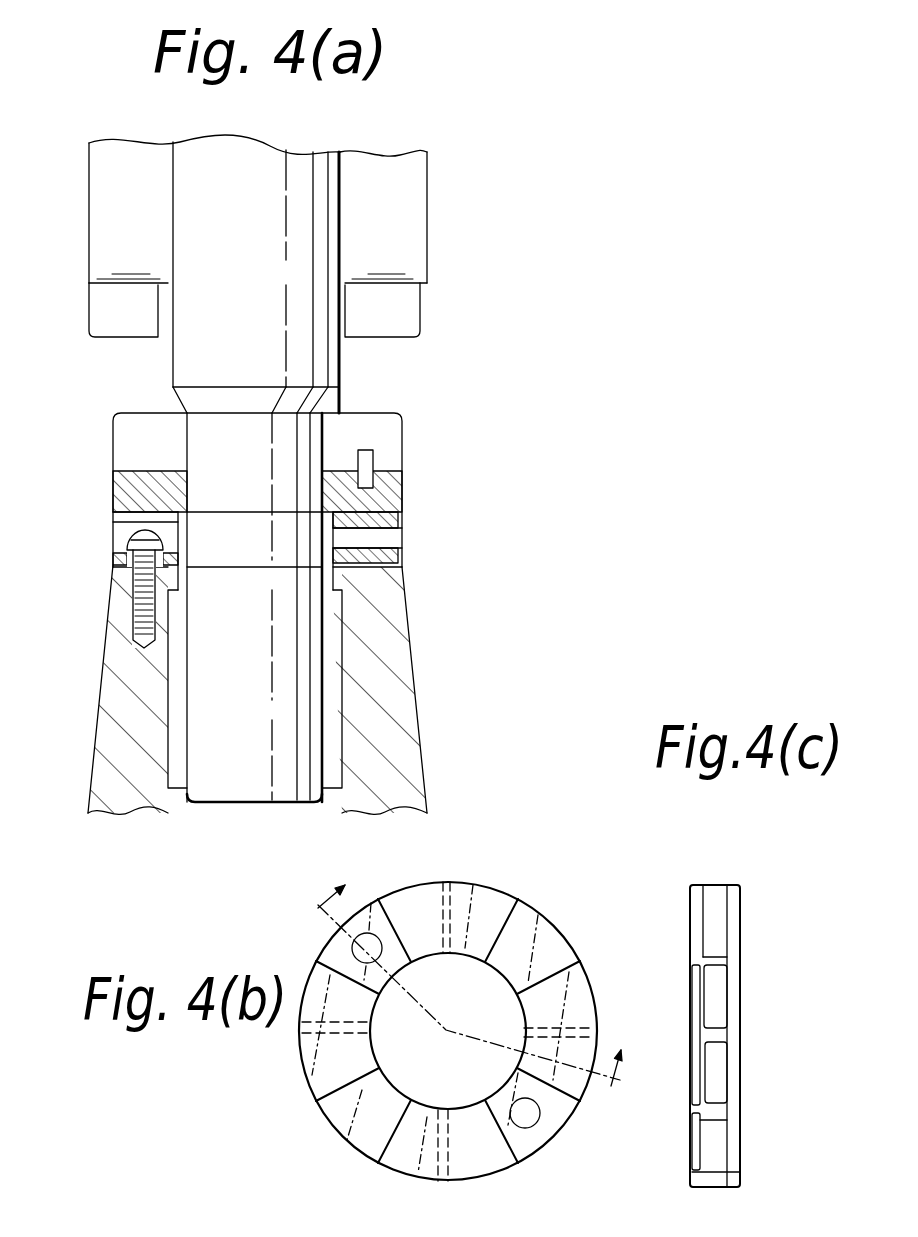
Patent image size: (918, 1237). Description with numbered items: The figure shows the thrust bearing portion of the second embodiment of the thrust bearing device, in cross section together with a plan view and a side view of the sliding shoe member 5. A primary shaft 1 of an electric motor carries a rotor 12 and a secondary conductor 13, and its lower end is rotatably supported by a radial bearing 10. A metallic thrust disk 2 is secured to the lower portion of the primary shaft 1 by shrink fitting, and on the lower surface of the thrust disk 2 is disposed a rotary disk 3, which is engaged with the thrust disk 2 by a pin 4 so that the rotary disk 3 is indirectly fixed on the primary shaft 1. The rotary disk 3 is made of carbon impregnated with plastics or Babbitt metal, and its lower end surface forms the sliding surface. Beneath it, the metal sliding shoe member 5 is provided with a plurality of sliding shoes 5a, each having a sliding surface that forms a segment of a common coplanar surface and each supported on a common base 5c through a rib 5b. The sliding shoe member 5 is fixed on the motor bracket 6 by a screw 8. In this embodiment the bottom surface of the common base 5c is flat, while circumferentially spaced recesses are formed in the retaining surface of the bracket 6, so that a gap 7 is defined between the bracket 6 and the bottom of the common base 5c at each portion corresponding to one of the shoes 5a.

In FIG. 4A, the primary shaft 1 is at (340, 193).
In FIG. 4A, the rotor 12 is at (427, 238).
In FIG. 4A, the secondary conductor 13 is at (427, 312).
In FIG. 4A, the thrust disk 2 is at (402, 440).
In FIG. 4A, the rotary disk 3 is at (113, 495).
In FIG. 4A, the pin 4 is at (375, 462).
In FIG. 4A, the sliding shoe member 5 is at (113, 543).
In FIG. 4B, the sliding shoe member 5 is at (568, 935).
In FIG. 4C, the sliding shoe member 5 is at (731, 875).
In FIG. 4A, the sliding shoe 5a is at (113, 515).
In FIG. 4B, the sliding shoe 5a is at (497, 912).
In FIG. 4C, the sliding shoe 5a is at (695, 985).
In FIG. 4A, the rib 5b is at (402, 538).
In FIG. 4B, the rib 5b is at (465, 890).
In FIG. 4C, the rib 5b is at (710, 1037).
In FIG. 4A, the common base 5c is at (113, 557).
In FIG. 4B, the common base 5c is at (533, 968).
In FIG. 4C, the common base 5c is at (730, 1068).
In FIG. 4A, the motor bracket 6 is at (427, 676).
In FIG. 4A, the gap 7 is at (390, 570).
In FIG. 4A, the screw 8 is at (132, 603).
In FIG. 4A, the radial bearing 10 is at (163, 728).